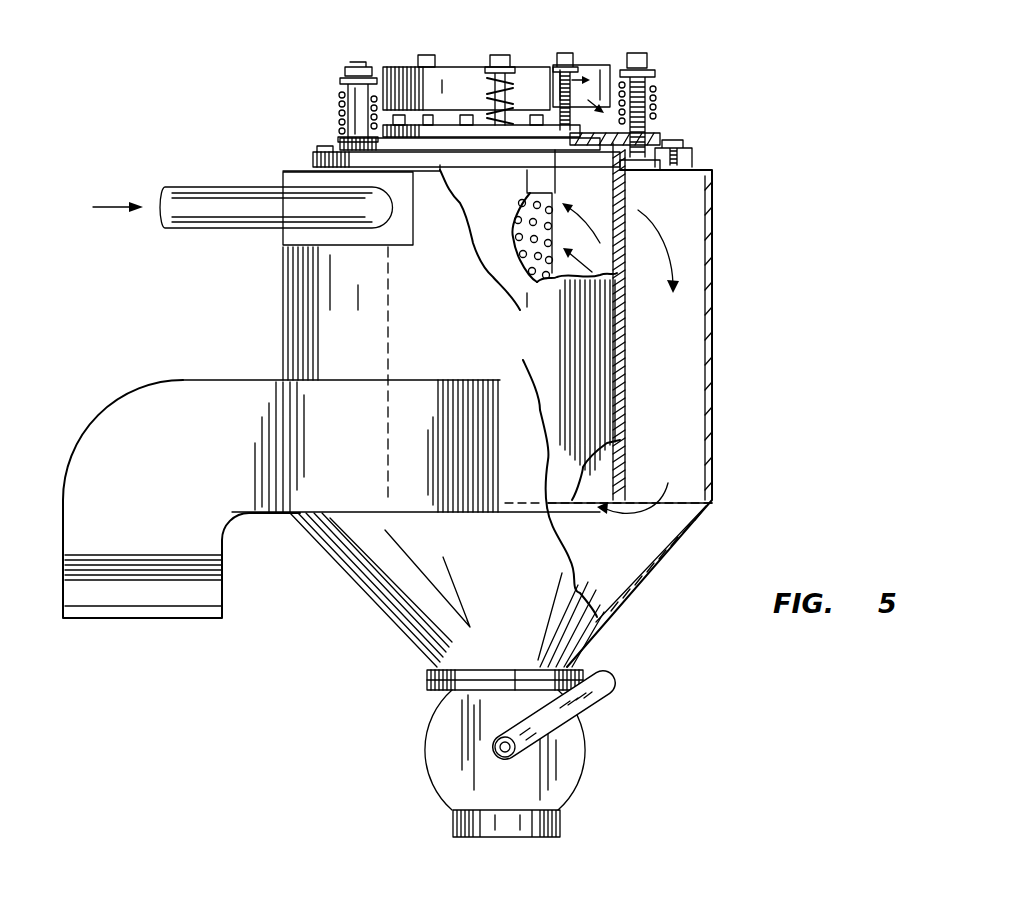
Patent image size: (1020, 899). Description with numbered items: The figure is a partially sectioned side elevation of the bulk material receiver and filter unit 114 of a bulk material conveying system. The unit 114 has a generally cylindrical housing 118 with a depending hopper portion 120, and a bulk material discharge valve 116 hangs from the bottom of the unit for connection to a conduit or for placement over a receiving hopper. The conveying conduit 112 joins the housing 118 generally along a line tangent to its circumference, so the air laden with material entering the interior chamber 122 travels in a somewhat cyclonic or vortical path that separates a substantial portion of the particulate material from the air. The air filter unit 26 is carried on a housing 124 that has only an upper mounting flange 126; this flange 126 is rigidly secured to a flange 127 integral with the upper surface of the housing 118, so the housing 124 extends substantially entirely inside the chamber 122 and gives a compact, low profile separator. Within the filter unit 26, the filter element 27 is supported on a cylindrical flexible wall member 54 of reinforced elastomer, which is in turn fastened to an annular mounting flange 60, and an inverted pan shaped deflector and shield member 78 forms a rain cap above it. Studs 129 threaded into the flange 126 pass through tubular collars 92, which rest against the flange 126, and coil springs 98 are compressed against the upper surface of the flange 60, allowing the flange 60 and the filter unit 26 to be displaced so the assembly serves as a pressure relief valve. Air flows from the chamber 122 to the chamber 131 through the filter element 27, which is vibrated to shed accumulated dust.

The filter unit 26 is at (580, 258).
The filter element 27 is at (553, 195).
The flexible wall member 54 is at (537, 157).
The mounting flange 60 is at (657, 130).
The air flow deflector and shield member 78 is at (540, 62).
The tubular collars 92 is at (343, 100).
The coil spring 98 is at (340, 128).
The conduit 112 is at (200, 198).
The receiver and filter unit 114 is at (722, 219).
The bulk material discharge valve 116 is at (577, 763).
The housing 118 is at (715, 398).
The hopper portion 120 is at (640, 592).
The interior chamber 122 is at (676, 388).
The housing 124 is at (618, 248).
The mounting flange 126 is at (687, 150).
The flange 127 is at (686, 163).
The studs 129 is at (355, 60).
The chamber 131 is at (610, 221).